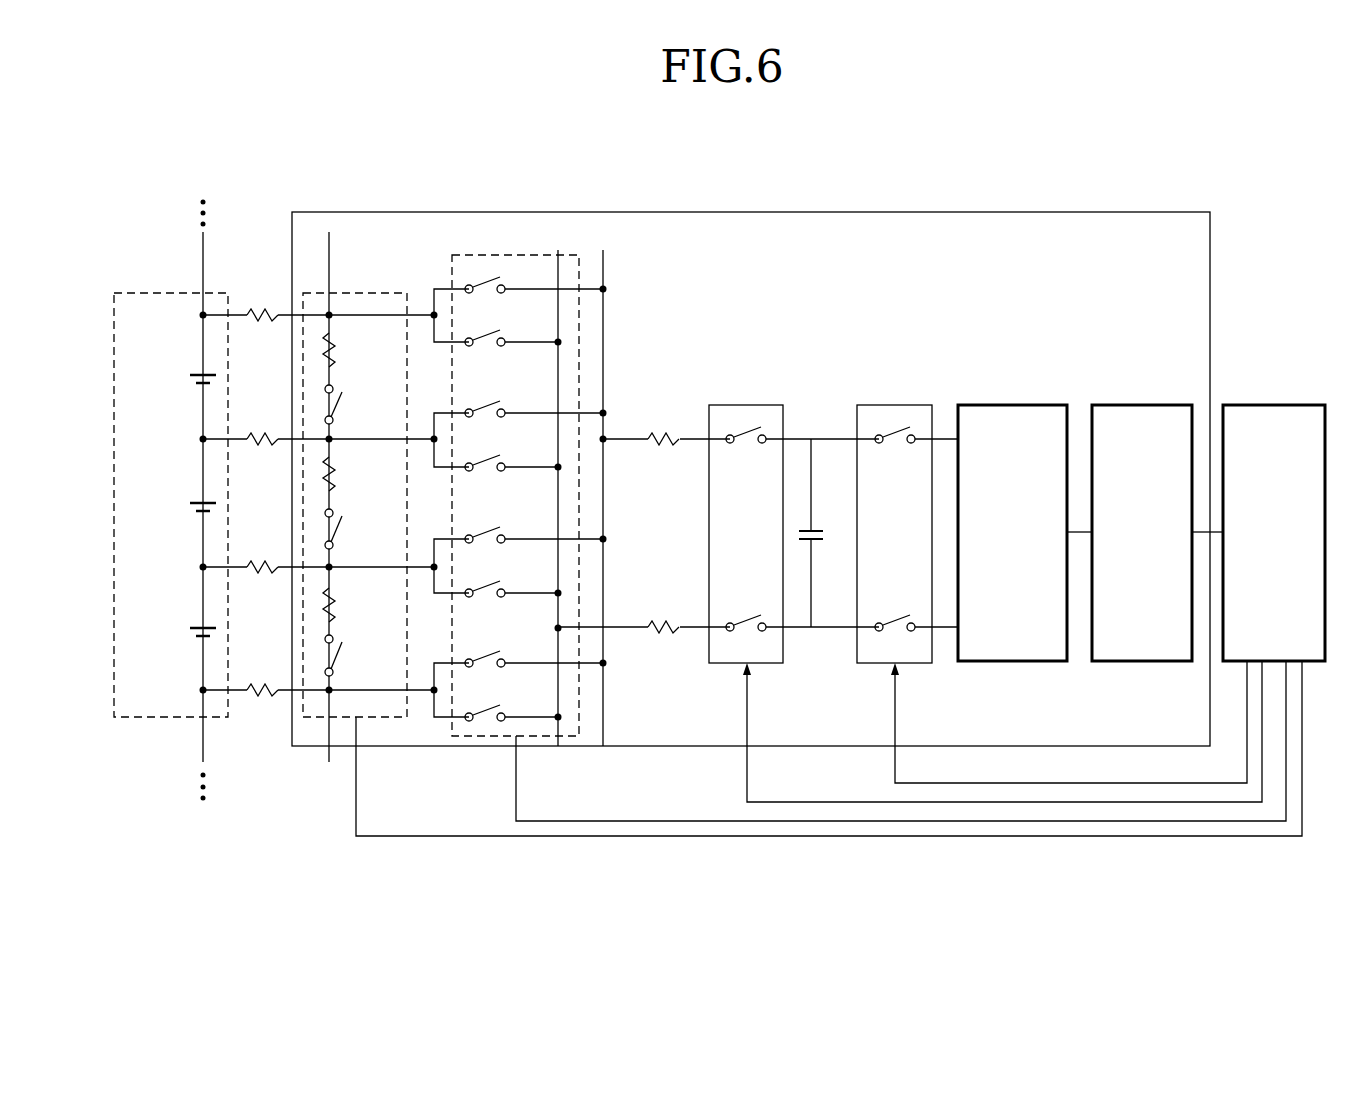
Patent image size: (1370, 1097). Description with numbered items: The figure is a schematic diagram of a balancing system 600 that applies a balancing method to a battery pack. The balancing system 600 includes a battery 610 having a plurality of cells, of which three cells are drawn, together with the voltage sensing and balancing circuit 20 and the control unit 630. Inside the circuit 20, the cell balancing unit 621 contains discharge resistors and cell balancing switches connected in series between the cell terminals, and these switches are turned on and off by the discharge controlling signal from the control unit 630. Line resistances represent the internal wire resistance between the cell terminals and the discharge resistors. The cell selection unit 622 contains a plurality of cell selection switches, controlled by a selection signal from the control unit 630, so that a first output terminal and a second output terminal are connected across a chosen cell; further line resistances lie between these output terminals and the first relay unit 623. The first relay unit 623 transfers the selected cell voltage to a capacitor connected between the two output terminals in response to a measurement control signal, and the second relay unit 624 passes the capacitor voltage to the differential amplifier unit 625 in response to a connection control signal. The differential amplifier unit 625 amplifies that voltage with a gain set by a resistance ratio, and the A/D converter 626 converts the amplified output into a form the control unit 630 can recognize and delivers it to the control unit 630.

The balancing system 600 is at (663, 158).
The voltage sensing and balancing circuit 20 is at (1047, 211).
The battery 610 is at (152, 293).
The cell balancing unit 621 is at (377, 293).
The cell selection unit 622 is at (509, 255).
The first relay unit 623 is at (745, 405).
The second relay unit 624 is at (895, 405).
The differential amplifier unit 625 is at (1010, 405).
The A/D converter 626 is at (1140, 405).
The control unit 630 is at (1271, 405).